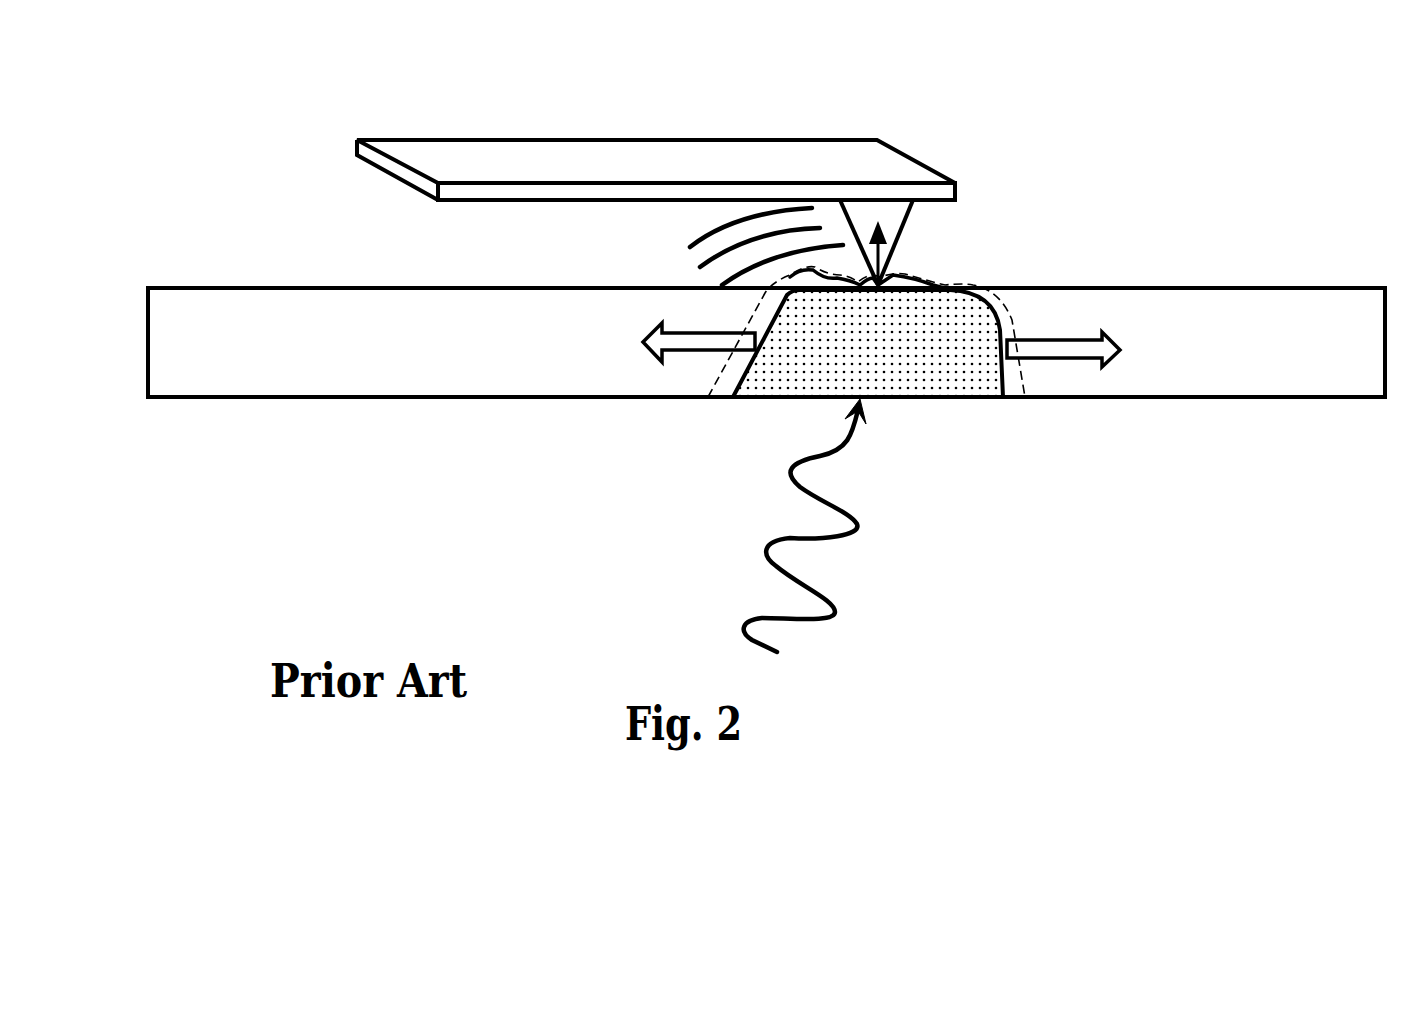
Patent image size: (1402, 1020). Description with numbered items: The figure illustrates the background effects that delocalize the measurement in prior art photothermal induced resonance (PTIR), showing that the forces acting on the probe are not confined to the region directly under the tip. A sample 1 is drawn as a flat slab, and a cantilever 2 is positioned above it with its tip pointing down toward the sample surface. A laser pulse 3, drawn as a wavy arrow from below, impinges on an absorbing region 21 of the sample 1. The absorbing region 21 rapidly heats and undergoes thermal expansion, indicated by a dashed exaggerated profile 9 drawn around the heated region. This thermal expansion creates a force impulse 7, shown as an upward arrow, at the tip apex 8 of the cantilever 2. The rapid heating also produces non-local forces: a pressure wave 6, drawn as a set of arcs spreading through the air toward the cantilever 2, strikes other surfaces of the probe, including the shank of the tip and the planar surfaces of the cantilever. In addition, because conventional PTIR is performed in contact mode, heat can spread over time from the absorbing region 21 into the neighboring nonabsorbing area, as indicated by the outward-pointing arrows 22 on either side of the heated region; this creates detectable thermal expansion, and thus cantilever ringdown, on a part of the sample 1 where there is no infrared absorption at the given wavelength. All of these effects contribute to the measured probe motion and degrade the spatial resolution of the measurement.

The sample 1 is at (338, 402).
The cantilever 2 is at (708, 123).
The laser pulse 3 is at (763, 505).
The pressure wave 6 is at (683, 258).
The force impulse 7 is at (880, 247).
The tip apex 8 is at (887, 278).
The exaggerated profile 9 is at (1010, 308).
The absorbing region 21 is at (967, 400).
The arrows 22 is at (673, 370).